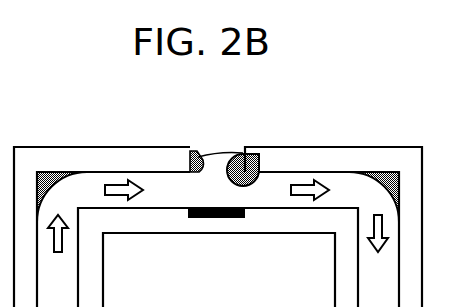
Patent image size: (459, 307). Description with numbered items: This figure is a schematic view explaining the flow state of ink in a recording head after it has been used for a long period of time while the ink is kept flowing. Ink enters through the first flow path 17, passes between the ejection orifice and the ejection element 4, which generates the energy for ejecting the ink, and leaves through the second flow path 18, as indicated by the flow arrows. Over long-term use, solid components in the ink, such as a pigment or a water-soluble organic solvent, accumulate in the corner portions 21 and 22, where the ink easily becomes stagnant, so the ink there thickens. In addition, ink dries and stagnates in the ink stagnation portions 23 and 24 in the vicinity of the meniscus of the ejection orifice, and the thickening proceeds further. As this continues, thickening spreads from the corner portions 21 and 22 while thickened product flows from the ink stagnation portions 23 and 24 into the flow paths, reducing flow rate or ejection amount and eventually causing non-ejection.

The ejection element 4 is at (203, 218).
The first flow path 17 is at (73, 193).
The second flow path 18 is at (351, 195).
The corner portion 21 is at (45, 171).
The corner portion 22 is at (384, 183).
The ink stagnation portion 23 is at (196, 156).
The ink stagnation portion 24 is at (244, 153).